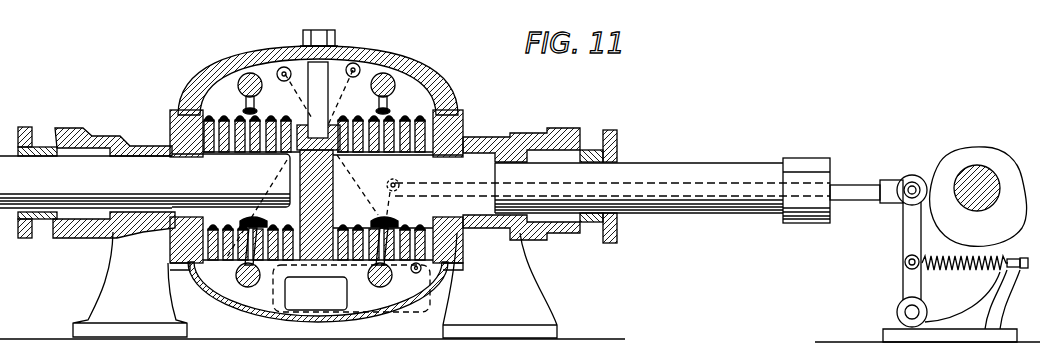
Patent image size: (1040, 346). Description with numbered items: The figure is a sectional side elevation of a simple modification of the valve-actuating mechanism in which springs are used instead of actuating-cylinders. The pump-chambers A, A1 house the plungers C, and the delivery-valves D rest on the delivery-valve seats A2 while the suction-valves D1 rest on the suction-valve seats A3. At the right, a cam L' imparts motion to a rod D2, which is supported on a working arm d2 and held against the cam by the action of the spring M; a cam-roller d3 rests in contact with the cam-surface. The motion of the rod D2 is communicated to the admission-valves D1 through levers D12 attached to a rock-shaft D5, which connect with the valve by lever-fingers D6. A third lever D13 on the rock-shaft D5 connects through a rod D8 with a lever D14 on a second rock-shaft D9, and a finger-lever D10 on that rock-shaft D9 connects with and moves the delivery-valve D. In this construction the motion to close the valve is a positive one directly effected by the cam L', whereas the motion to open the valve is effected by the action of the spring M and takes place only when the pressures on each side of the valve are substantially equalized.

The pump-chamber A is at (355, 170).
The pump-chamber A1 is at (176, 146).
The seat of the delivery-valve A2 is at (205, 93).
The seat of the suction-valve A3 is at (200, 285).
The plunger C is at (391, 184).
The delivery-valve D is at (246, 111).
The suction-valve D1 is at (185, 238).
The rod D2 is at (857, 184).
The rock-shaft D5 is at (245, 314).
The lever-finger D6 is at (312, 233).
The rod D8 is at (292, 165).
The rock-shaft D9 is at (248, 64).
The finger-lever D10 is at (256, 99).
The lever D12 is at (405, 190).
The third lever D13 is at (413, 275).
The lever D14 is at (283, 67).
The working arm d2 is at (908, 246).
The cam-roller d3 is at (913, 178).
The cam L' is at (978, 197).
The spring M is at (975, 275).